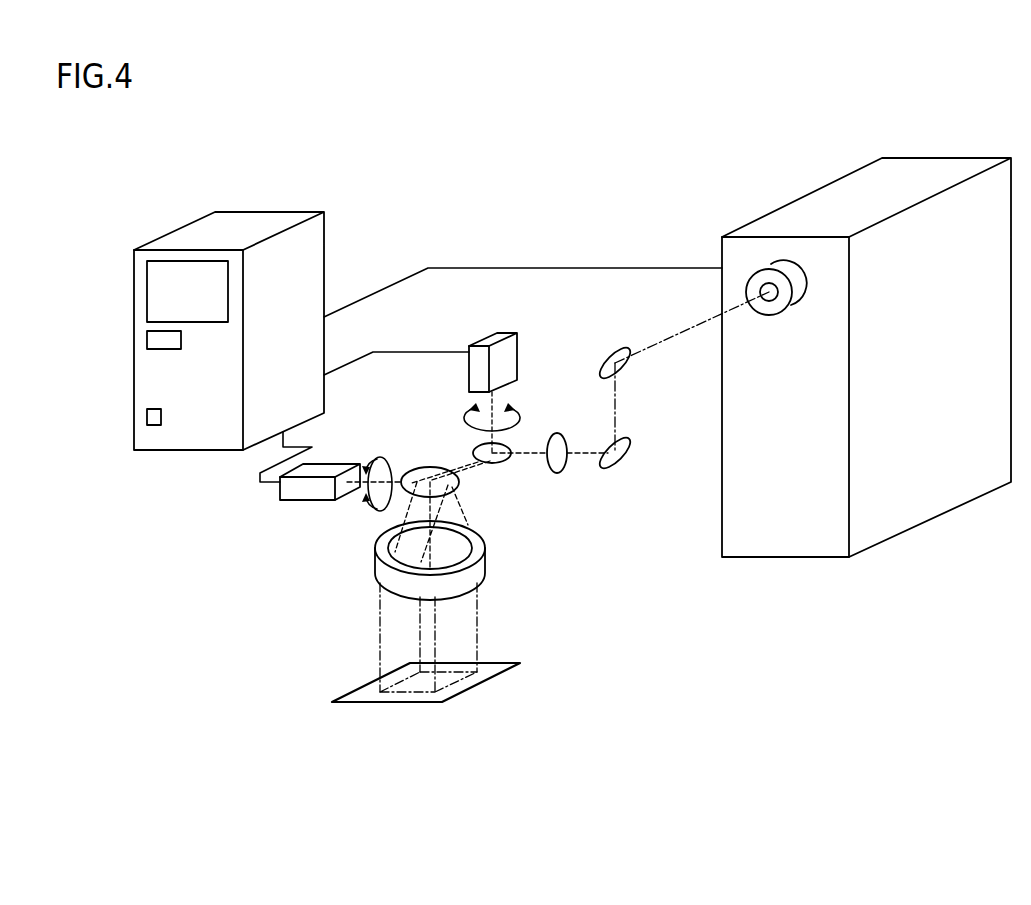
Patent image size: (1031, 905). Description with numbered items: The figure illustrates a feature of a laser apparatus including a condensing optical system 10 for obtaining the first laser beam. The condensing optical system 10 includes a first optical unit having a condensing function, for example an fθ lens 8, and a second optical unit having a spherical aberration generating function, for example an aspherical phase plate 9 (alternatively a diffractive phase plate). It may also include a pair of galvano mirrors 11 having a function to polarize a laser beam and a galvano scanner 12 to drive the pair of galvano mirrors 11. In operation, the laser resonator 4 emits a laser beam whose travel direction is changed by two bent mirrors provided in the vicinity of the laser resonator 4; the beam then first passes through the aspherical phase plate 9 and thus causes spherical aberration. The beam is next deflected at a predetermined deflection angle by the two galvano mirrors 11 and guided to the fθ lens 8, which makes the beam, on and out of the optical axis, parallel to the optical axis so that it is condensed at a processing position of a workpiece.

The laser resonator 4 is at (897, 178).
The fθ lens 8 is at (486, 565).
The aspherical phase plate 9 is at (559, 473).
The condensing optical system 10 is at (609, 500).
The galvano mirrors 11 is at (456, 488).
The galvano scanner 12 is at (490, 333).